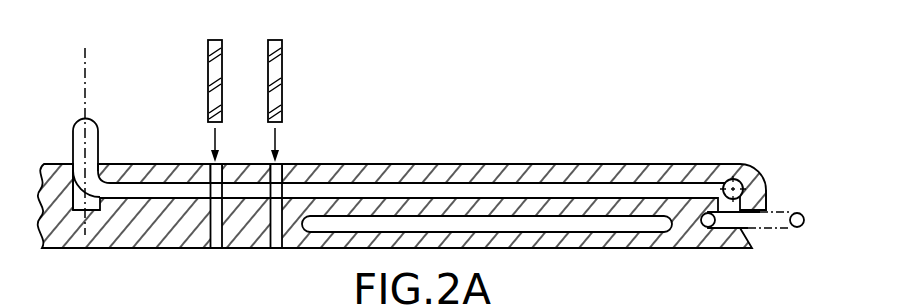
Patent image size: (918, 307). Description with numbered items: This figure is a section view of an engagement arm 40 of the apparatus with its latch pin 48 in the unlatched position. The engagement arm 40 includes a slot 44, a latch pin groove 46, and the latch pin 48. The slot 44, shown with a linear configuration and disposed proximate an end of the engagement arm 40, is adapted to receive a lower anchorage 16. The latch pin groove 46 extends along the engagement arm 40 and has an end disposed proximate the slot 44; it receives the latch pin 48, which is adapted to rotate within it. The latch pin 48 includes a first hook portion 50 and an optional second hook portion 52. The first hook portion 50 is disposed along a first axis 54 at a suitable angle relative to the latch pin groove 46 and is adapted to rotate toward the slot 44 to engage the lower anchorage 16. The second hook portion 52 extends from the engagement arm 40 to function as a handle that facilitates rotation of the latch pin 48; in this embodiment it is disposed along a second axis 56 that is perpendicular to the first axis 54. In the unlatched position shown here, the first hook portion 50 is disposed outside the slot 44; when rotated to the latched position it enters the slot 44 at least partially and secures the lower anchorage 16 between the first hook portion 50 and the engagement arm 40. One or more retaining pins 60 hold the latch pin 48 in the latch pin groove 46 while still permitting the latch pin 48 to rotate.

The lower anchorage 16 is at (797, 229).
The engagement arm 40 is at (583, 165).
The slot 44 is at (722, 250).
The latch pin groove 46 is at (376, 176).
The latch pin 48 is at (486, 180).
The first hook portion 50 is at (737, 178).
The second hook portion 52 is at (73, 147).
The first axis 54 is at (743, 178).
The second axis 56 is at (83, 76).
The retaining pins 60 is at (274, 39).